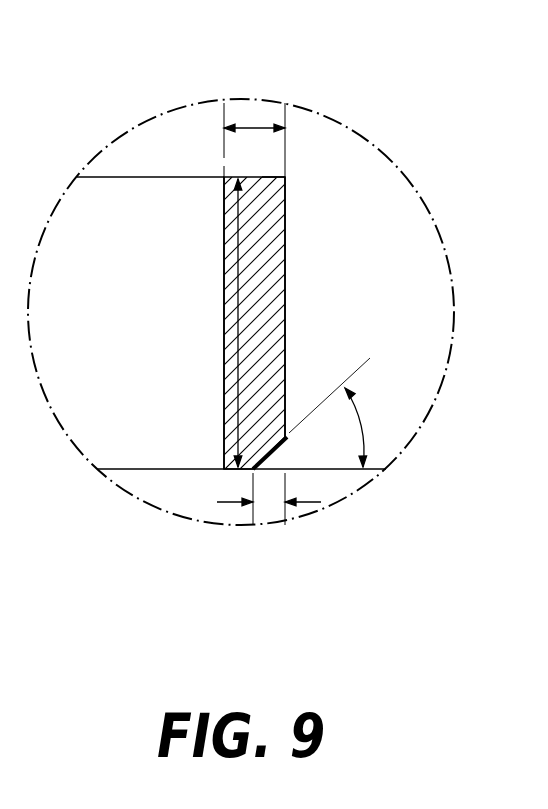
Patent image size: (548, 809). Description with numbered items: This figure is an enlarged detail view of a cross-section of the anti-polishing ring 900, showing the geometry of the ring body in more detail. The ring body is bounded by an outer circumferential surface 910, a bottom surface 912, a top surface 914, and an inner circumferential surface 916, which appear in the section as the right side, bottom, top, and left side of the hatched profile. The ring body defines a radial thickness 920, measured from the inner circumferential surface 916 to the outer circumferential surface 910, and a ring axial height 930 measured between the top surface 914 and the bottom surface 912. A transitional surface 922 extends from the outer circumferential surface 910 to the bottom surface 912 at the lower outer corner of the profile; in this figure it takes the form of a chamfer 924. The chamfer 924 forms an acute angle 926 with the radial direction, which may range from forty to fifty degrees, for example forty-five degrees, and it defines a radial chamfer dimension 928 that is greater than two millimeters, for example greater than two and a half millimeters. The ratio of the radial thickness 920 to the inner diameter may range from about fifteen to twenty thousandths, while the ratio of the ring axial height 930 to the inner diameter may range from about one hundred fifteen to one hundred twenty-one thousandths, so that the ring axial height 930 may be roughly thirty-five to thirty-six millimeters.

The anti-polishing ring 900 is at (352, 55).
The outer circumferential surface 910 is at (287, 297).
The bottom surface 912 is at (253, 468).
The top surface 914 is at (267, 176).
The inner circumferential surface 916 is at (223, 258).
The radial thickness 920 is at (252, 127).
The transitional surface 922 is at (270, 460).
The chamfer 924 is at (279, 447).
The acute angle 926 is at (358, 418).
The radial chamfer dimension 928 is at (310, 503).
The ring axial height 930 is at (238, 385).